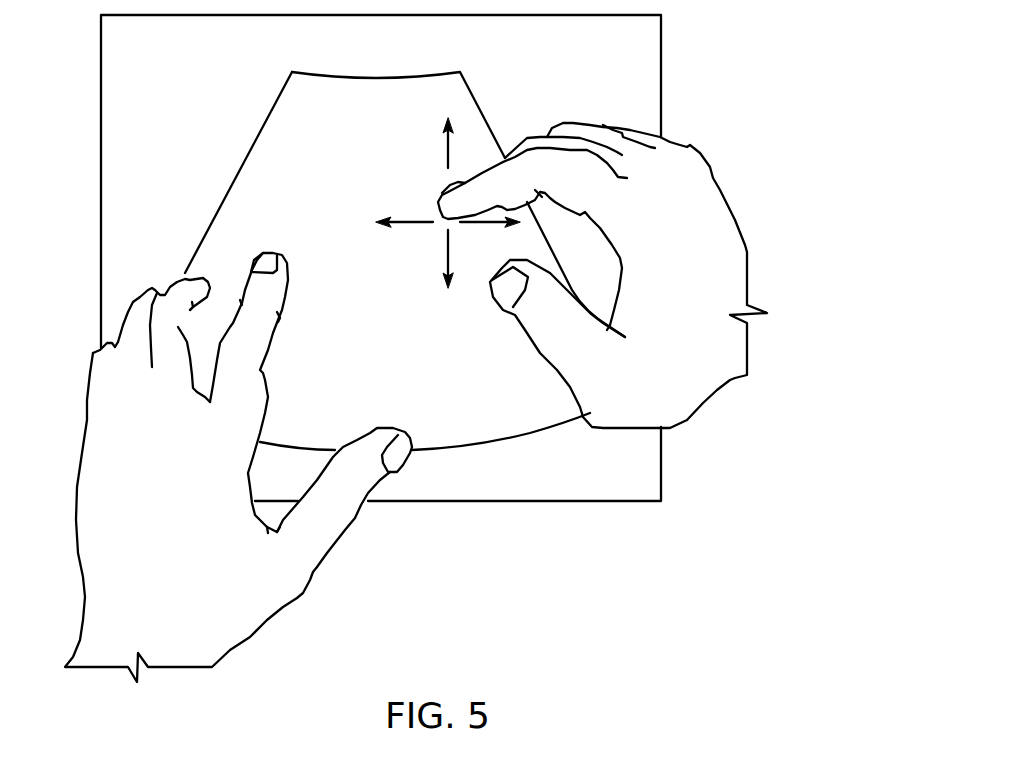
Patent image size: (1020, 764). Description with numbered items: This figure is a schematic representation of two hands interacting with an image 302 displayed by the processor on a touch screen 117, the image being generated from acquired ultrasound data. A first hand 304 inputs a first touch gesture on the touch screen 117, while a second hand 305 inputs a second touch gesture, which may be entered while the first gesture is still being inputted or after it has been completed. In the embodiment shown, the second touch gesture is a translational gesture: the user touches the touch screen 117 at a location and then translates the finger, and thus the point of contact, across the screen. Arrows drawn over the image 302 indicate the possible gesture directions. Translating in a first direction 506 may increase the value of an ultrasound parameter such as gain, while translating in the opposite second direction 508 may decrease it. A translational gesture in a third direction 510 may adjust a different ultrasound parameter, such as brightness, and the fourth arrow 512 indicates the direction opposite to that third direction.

The touch screen 117 is at (663, 73).
The image 302 is at (465, 98).
The first hand 304 is at (260, 335).
The second hand 305 is at (690, 167).
The first direction 506 is at (443, 138).
The second direction 508 is at (443, 253).
The third direction 510 is at (462, 223).
The leftward direction arrow 512 is at (407, 215).